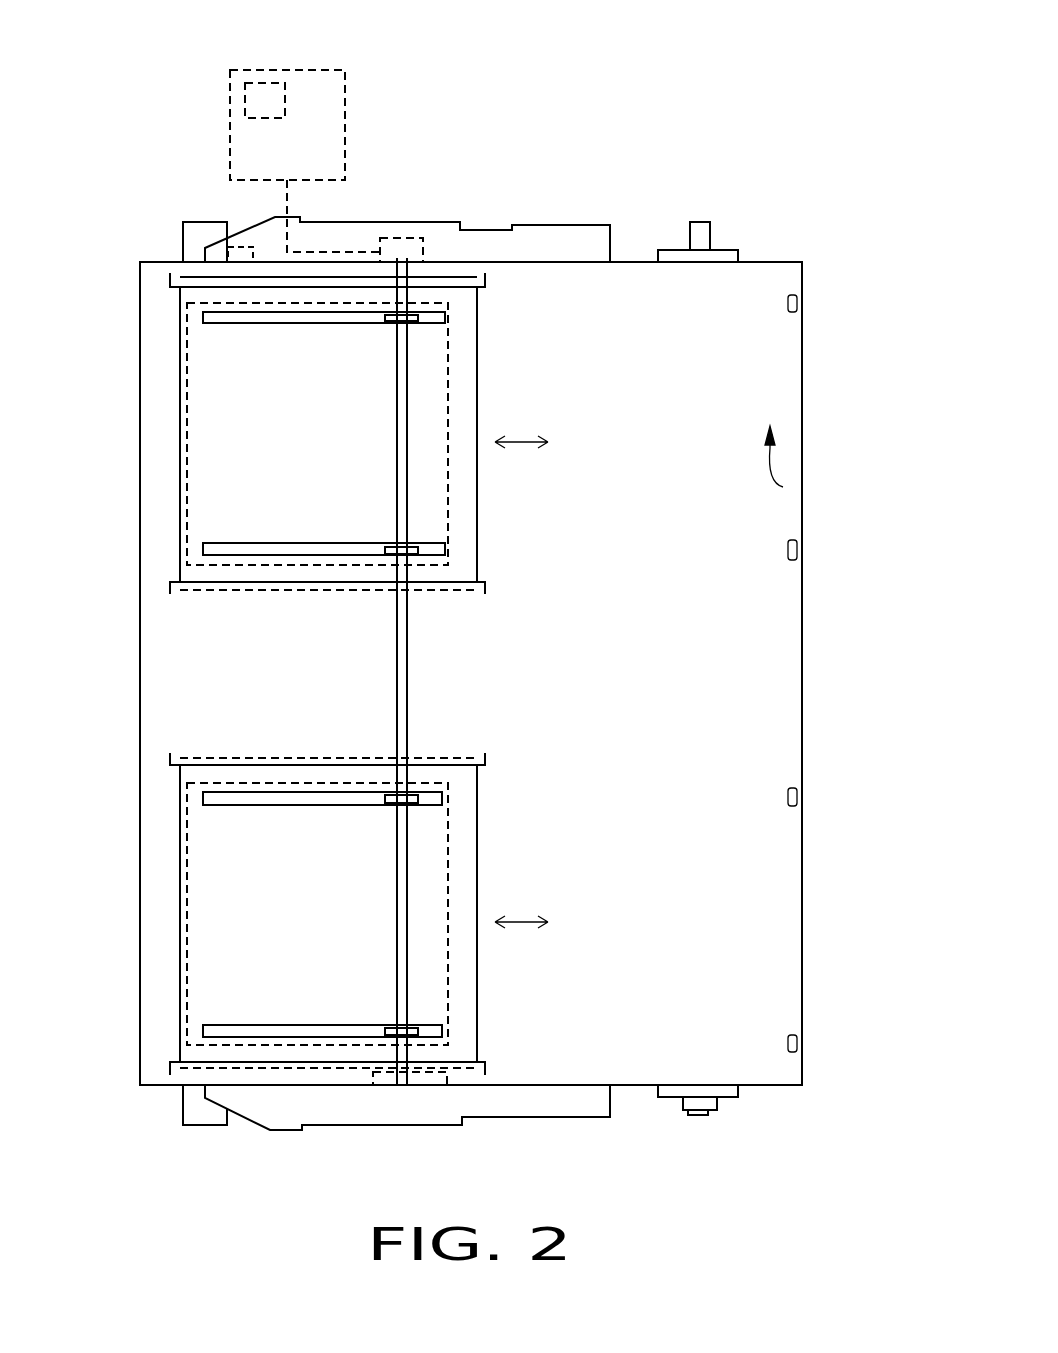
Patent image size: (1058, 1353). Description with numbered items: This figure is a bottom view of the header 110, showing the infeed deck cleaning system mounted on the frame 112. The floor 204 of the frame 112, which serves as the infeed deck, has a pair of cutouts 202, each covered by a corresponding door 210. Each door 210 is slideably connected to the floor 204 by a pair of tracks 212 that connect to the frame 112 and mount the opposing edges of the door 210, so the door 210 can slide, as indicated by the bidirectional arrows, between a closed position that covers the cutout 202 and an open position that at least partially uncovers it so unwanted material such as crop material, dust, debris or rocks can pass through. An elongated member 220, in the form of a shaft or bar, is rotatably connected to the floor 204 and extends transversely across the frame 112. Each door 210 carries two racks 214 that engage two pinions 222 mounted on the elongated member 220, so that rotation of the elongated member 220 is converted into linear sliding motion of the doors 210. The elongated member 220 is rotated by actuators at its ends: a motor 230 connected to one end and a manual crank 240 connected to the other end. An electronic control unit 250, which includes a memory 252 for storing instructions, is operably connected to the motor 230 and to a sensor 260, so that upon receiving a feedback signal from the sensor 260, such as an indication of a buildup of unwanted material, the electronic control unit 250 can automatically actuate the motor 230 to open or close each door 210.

The header 110 is at (782, 228).
The frame 112 is at (802, 377).
The cutout 202 is at (187, 462).
The floor 204 is at (783, 487).
The door 210 is at (477, 400).
The track 212 is at (170, 280).
The rack 214 is at (222, 325).
The elongated member 220 is at (403, 671).
The pinion 222 is at (415, 322).
The motor 230 is at (402, 238).
The manual crank 240 is at (423, 1087).
The electronic control unit 250 is at (315, 70).
The memory 252 is at (265, 118).
The sensor 260 is at (228, 255).